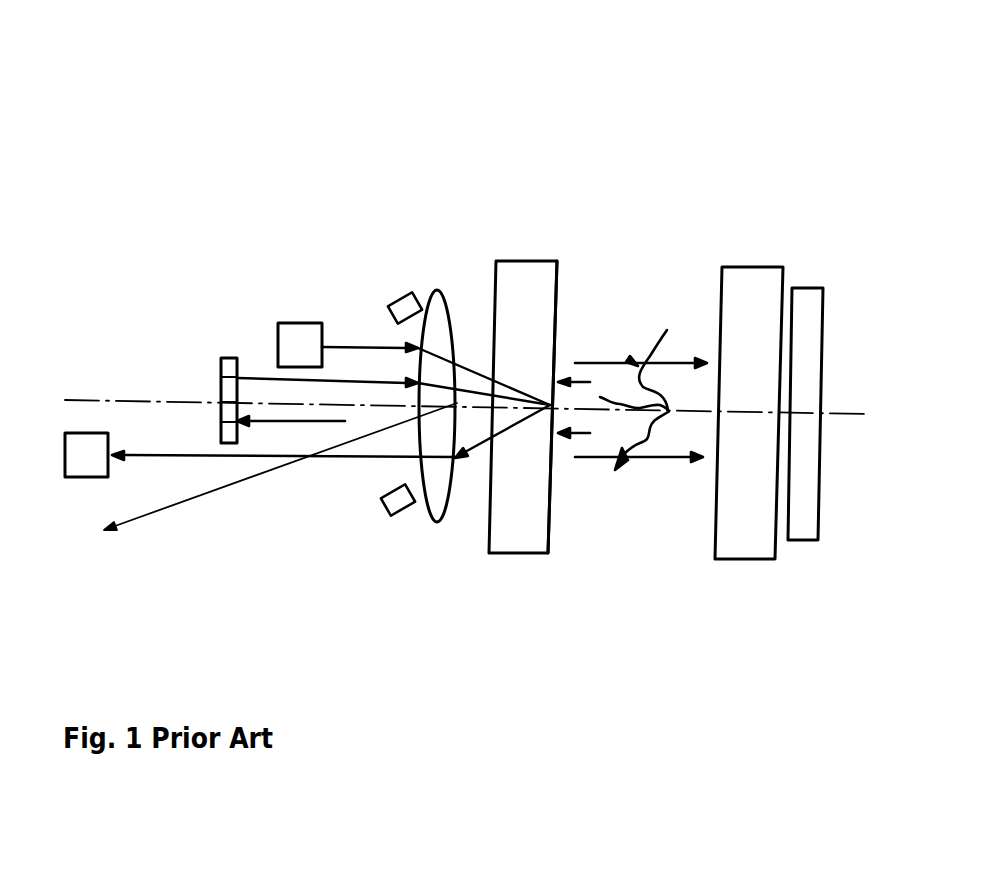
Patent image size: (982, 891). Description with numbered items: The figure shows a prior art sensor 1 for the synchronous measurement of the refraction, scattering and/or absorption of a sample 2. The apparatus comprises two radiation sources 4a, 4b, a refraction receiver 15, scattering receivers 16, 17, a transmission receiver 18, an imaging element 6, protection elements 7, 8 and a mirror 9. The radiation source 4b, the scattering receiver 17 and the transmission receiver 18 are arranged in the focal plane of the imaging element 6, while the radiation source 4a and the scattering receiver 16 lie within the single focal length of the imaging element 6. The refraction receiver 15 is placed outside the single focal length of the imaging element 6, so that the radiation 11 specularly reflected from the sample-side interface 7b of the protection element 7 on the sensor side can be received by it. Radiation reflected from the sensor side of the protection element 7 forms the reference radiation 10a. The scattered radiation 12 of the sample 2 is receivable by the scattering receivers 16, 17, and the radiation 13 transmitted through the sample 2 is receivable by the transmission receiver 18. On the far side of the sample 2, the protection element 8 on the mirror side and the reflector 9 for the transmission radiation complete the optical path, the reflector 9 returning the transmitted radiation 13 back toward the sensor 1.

The sensor 1 is at (183, 151).
The sample 2 is at (617, 262).
The radiation source 4a is at (297, 328).
The radiation source 4b is at (230, 357).
The imaging element 6 is at (447, 292).
The protection element on the sensor side 7 is at (520, 262).
The sample-side interface of the protection element 7b is at (562, 540).
The protection element on the mirror side 8 is at (752, 285).
The reflector for transmission radiation 9 is at (803, 300).
The reflected radiation from the protection element, sensor side 10a is at (235, 487).
The reflected radiation from the protection element, sample side 11 is at (475, 450).
The scattering of sample 12 is at (667, 330).
The transmitted radiation through the sample 13 is at (280, 423).
The refraction receiver 15 is at (90, 462).
The scattering receiver 16 is at (407, 297).
The scattering receiver 17 is at (217, 400).
The transmission receiver 18 is at (225, 445).